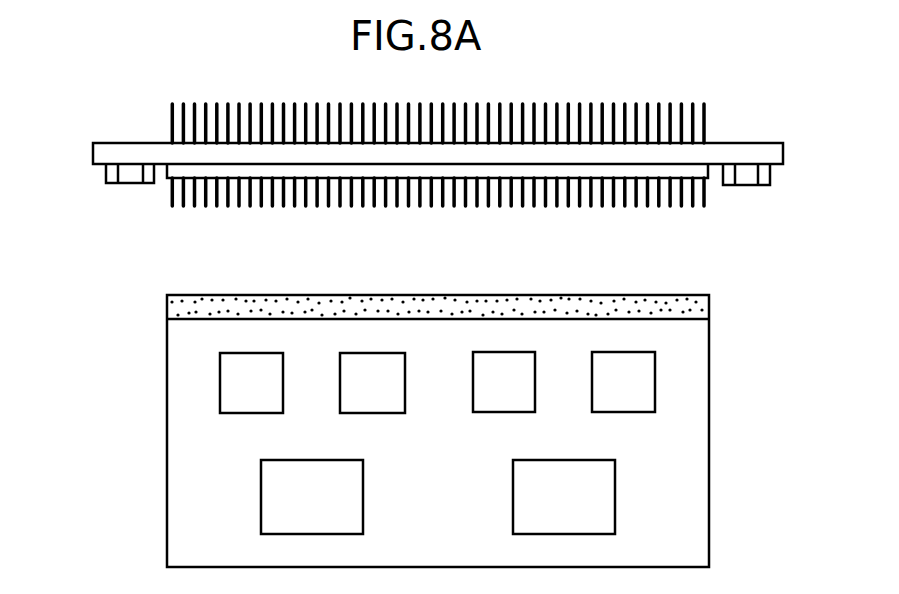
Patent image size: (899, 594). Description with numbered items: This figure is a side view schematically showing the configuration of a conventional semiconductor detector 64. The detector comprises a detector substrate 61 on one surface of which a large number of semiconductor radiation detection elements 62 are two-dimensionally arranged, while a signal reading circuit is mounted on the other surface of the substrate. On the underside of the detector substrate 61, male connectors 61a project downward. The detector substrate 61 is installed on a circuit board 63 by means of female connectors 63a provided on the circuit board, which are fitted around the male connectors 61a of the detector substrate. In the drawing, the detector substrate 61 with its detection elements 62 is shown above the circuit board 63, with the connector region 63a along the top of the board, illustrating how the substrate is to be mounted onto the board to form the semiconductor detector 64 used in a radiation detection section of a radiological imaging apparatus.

The detector substrate 61 is at (103, 155).
The male connectors 61a is at (706, 195).
The semiconductor radiation detection elements 62 is at (177, 111).
The circuit board 63 is at (688, 453).
The female connectors 63a is at (652, 305).
The semiconductor detector 64 is at (781, 265).